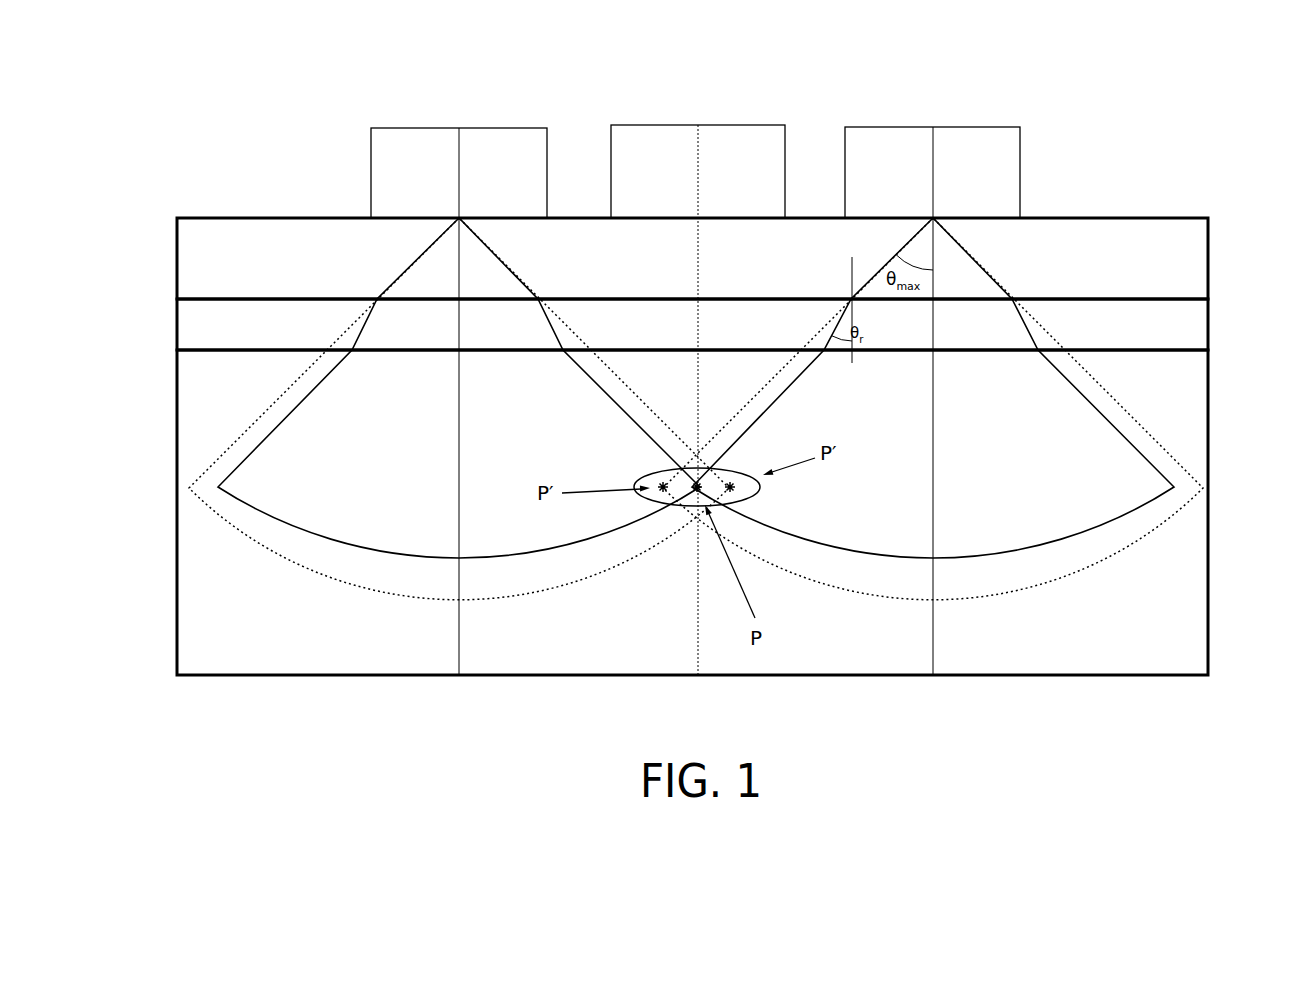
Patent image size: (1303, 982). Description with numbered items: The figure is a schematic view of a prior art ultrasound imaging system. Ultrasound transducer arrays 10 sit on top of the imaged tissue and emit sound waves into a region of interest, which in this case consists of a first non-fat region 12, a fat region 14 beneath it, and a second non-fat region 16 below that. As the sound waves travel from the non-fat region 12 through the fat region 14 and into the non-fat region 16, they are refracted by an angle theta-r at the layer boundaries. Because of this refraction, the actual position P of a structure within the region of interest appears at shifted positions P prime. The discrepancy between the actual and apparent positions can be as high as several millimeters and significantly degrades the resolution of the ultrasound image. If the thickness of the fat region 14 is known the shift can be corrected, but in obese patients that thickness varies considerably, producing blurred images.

The ultrasound transducer arrays 10 is at (905, 108).
The non-fat region 12 is at (1187, 246).
The fat region 14 is at (1187, 321).
The non-fat region 16 is at (1187, 394).